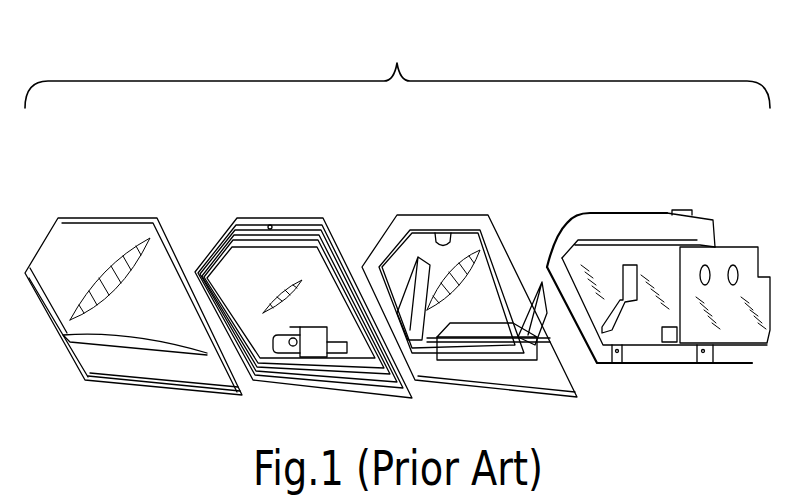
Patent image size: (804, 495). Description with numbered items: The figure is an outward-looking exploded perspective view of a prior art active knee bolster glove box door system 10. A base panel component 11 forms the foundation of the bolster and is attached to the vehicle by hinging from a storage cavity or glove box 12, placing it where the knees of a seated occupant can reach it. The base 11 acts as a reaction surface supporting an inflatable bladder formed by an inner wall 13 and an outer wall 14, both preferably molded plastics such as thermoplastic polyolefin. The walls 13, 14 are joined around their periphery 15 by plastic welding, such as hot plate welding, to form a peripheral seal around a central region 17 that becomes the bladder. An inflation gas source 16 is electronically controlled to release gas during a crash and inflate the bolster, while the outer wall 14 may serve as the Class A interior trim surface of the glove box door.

The active knee bolster system 10 is at (397, 70).
The base panel component 11 is at (425, 212).
The glove box 12 is at (612, 215).
The inner wall 13 is at (242, 217).
The outer wall 14 is at (117, 211).
The periphery 15 is at (302, 220).
The inflation gas source 16 is at (310, 350).
The central region 17 is at (297, 268).